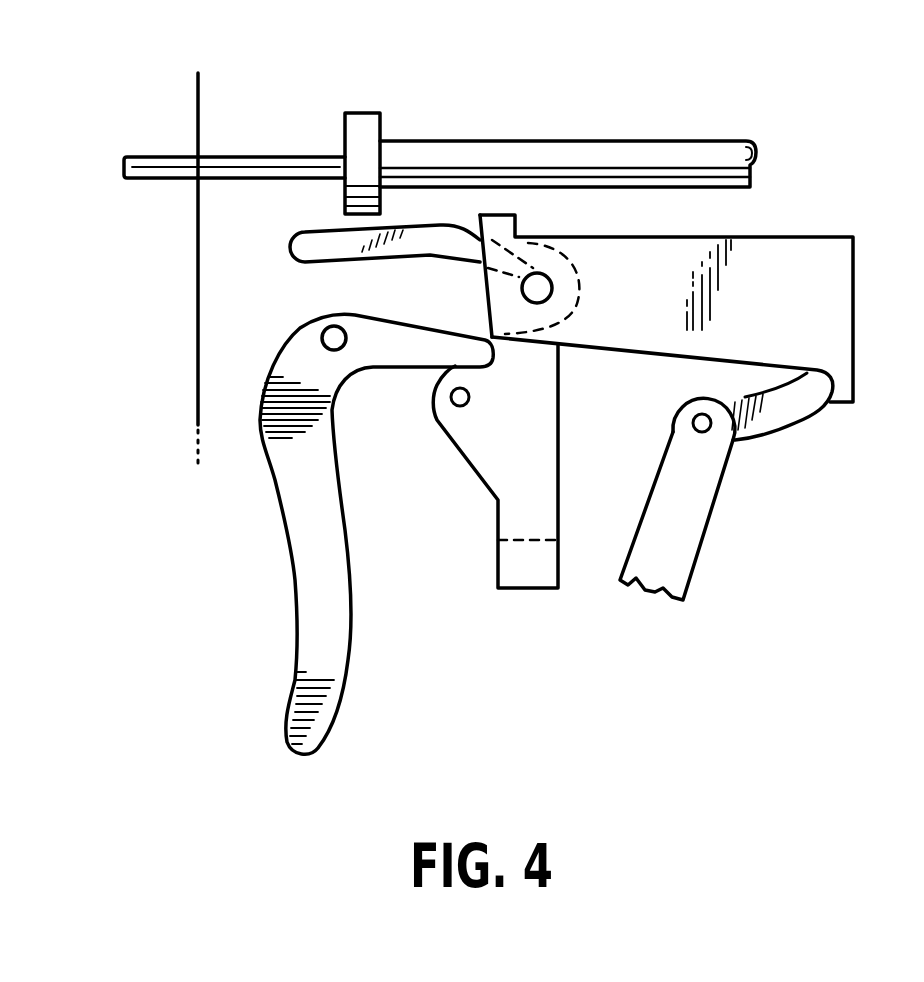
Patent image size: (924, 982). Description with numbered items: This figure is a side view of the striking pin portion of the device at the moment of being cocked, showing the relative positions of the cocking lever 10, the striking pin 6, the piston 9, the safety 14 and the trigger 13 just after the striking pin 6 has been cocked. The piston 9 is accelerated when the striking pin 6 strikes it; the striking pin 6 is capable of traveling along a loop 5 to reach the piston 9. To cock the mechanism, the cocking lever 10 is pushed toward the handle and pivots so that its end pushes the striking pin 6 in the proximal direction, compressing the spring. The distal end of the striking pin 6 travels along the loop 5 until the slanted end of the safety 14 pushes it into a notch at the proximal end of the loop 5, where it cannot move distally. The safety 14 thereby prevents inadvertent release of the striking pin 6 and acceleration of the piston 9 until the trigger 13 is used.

The loop 5 is at (322, 240).
The striking pin 6 is at (645, 292).
The piston 9 is at (588, 160).
The cocking lever 10 is at (768, 413).
The trigger 13 is at (320, 530).
The safety 14 is at (535, 568).